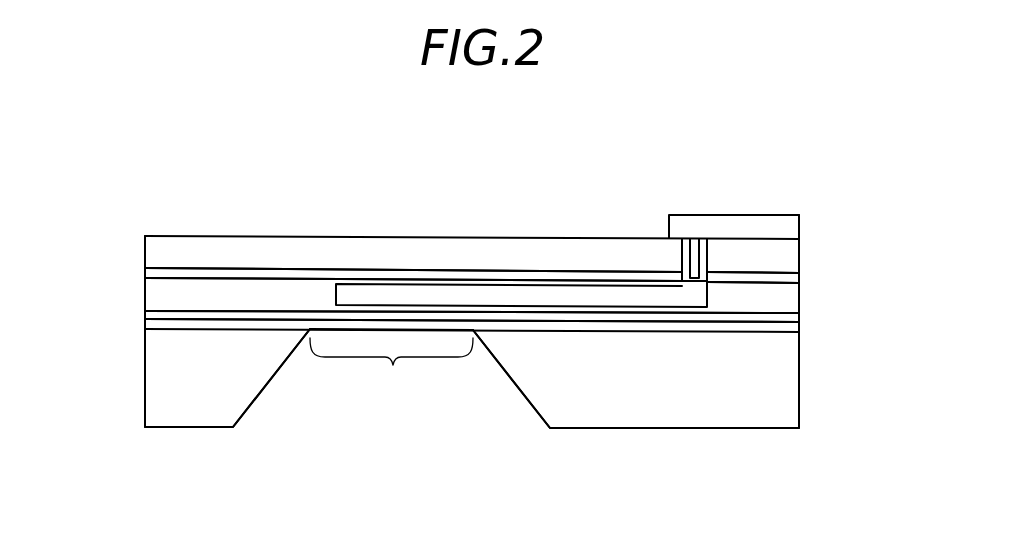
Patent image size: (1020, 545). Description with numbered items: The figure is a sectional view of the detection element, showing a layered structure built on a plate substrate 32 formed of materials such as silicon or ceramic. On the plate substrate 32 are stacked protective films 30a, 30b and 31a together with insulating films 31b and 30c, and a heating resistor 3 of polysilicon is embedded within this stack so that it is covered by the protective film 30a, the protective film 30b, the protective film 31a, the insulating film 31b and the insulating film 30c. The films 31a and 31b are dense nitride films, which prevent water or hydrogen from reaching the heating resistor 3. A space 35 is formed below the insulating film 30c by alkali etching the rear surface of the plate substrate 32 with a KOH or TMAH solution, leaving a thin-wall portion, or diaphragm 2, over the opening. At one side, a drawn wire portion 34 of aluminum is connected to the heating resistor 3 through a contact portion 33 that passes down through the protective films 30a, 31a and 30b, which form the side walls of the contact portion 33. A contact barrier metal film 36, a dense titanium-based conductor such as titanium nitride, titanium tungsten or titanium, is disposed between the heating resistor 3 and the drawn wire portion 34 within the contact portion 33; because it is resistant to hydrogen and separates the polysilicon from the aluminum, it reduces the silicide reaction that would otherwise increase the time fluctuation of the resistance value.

The thin-wall portion (diaphragm) 2 is at (391, 372).
The heating resistor 3 is at (423, 305).
The protective film 30a is at (170, 250).
The protective film 30b is at (147, 293).
The insulating film 30c is at (147, 325).
The protective film 31a is at (147, 271).
The insulating film 31b is at (147, 316).
The plate substrate 32 is at (147, 397).
The contact portion 33 is at (682, 258).
The drawn wire portion 34 is at (728, 226).
The space 35 is at (423, 405).
The contact barrier metal film 36 is at (700, 257).